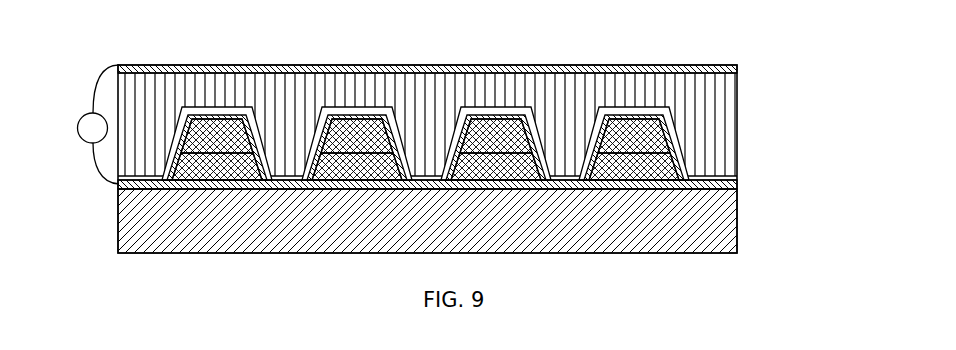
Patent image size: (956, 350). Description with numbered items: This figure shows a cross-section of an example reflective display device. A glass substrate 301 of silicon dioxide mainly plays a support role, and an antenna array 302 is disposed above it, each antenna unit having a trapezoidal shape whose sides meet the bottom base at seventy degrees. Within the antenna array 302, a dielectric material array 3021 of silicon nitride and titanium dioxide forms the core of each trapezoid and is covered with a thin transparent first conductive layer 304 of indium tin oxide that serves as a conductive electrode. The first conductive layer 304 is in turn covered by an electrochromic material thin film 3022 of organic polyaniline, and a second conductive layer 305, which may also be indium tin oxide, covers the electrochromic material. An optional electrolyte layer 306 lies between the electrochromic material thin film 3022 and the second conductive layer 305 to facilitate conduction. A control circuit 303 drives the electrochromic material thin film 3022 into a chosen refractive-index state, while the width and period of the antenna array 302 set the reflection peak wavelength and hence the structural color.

The substrate 301 is at (688, 220).
The antenna array 302 is at (525, 142).
The dielectric material array 3021 is at (663, 168).
The electrochromic material thin film 3022 is at (675, 138).
The control circuit 303 is at (78, 129).
The first conductive layer 304 is at (200, 117).
The second conductive layer 305 is at (253, 72).
The electrolyte layer 306 is at (417, 87).